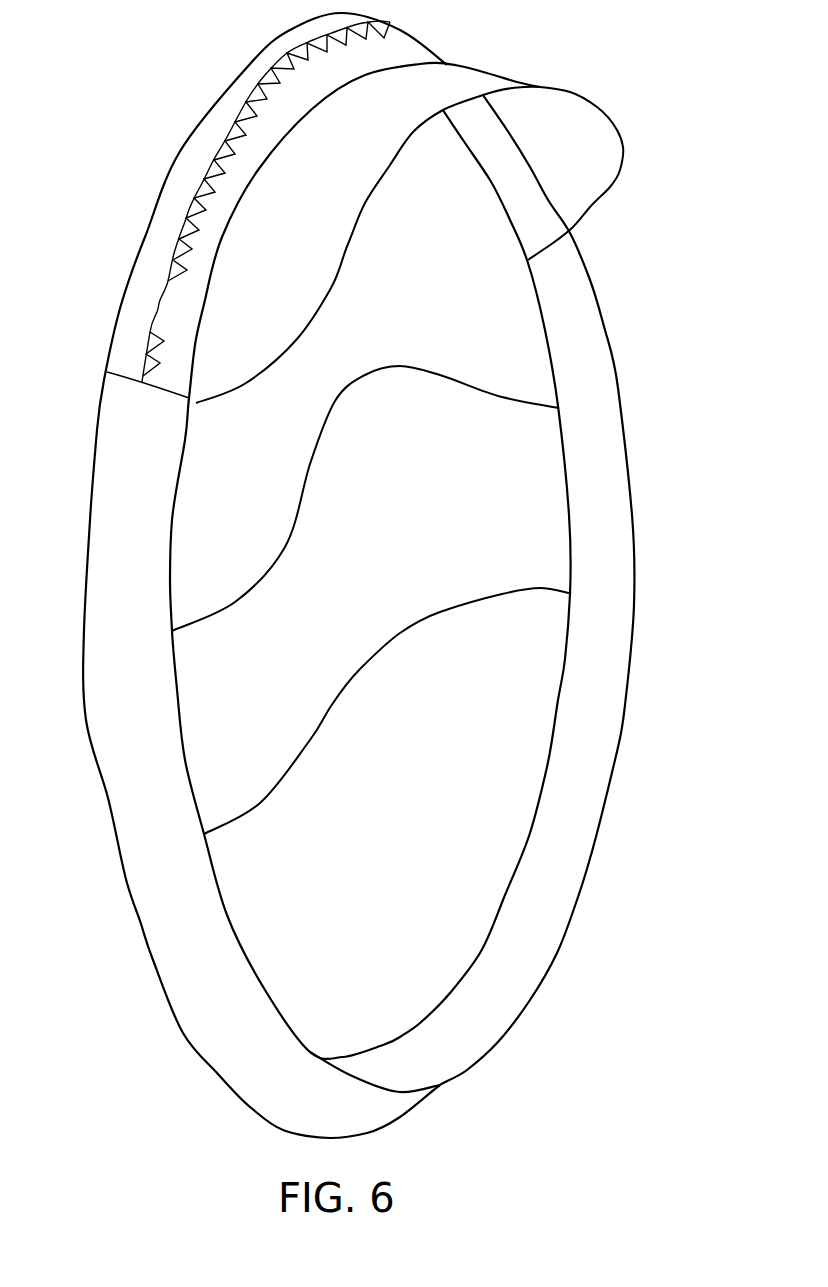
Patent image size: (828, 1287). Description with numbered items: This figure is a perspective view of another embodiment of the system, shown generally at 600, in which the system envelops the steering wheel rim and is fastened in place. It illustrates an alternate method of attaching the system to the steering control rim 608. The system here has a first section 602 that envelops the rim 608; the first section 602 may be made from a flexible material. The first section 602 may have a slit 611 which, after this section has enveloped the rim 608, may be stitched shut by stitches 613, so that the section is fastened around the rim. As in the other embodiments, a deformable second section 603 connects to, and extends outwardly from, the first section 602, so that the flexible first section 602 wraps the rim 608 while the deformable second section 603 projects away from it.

The system 600 is at (578, 58).
The first section 602 is at (109, 372).
The deformable second section 603 is at (348, 245).
The steering control rim 608 is at (628, 703).
The slit 611 is at (125, 355).
The stitches 613 is at (180, 225).